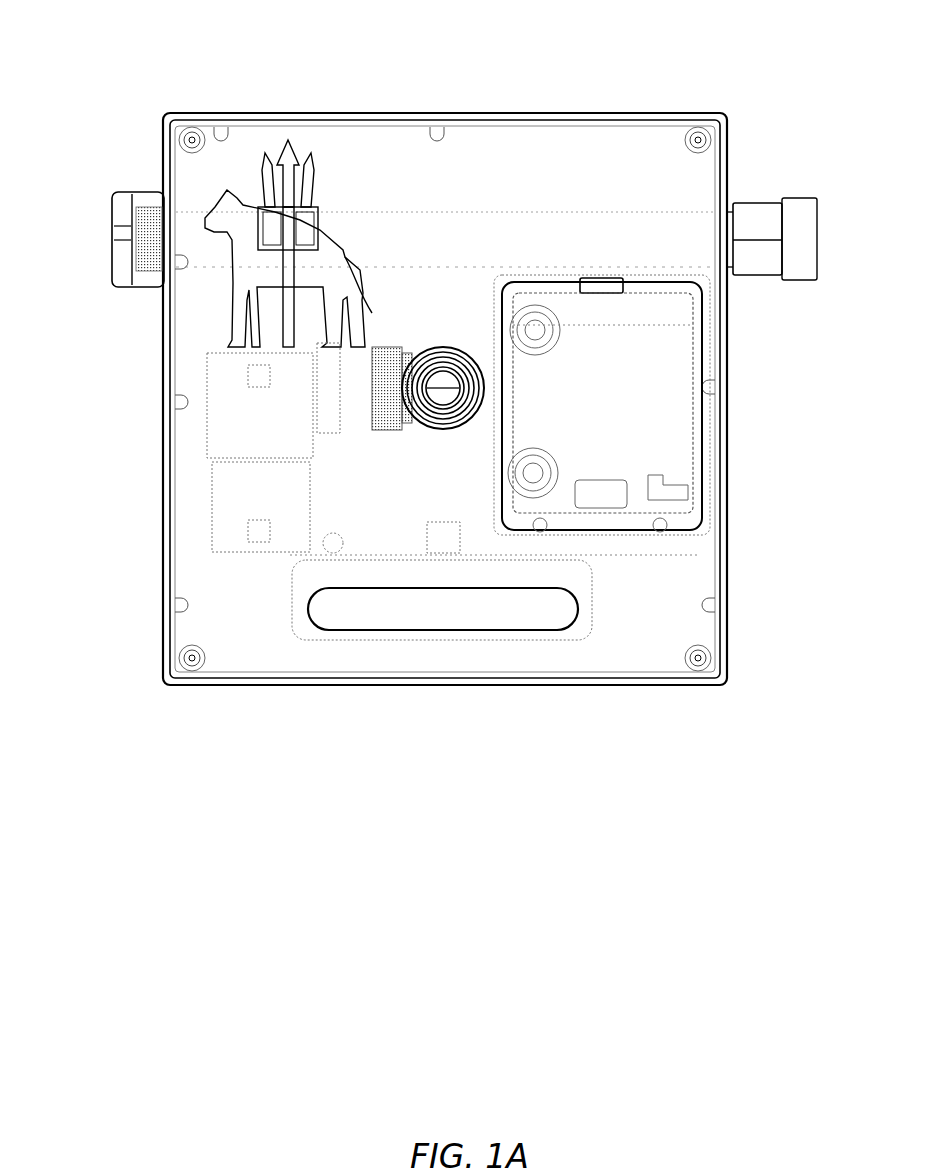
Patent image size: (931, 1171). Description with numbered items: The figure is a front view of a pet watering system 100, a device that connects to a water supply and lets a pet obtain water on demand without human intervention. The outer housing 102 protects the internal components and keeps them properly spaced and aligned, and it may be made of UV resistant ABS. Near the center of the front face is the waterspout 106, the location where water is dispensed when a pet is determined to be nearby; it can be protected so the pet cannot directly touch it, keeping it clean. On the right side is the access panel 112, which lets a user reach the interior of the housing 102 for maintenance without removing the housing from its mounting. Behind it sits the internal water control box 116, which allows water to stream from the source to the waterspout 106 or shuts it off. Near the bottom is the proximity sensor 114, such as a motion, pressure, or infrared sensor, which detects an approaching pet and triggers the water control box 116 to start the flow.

The pet watering system 100 is at (115, 120).
The housing 102 is at (464, 399).
The waterspout 106 is at (443, 346).
The access panel 112 is at (672, 437).
The proximity sensor 114 is at (550, 615).
The water control box 116 is at (672, 380).